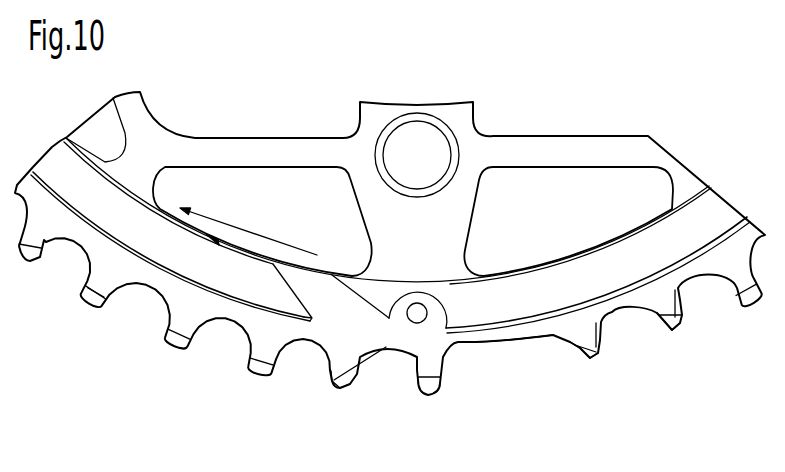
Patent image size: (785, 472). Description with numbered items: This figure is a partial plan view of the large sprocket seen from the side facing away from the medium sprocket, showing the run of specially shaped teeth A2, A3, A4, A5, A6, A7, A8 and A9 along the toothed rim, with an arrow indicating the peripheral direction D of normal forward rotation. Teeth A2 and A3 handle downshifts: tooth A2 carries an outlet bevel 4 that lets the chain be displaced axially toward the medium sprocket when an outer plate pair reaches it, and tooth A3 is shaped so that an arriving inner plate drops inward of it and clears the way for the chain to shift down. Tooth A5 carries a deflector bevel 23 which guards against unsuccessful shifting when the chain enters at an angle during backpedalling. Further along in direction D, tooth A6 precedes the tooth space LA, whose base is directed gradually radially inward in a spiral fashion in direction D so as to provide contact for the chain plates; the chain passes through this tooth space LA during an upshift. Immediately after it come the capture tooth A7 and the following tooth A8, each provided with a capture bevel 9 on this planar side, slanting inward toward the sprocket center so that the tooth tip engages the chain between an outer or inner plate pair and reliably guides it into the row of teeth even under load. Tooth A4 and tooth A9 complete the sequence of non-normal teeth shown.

The outlet bevel 4 is at (48, 263).
The capture bevel 9 is at (590, 360).
The deflector bevel 23 is at (345, 381).
The tooth A2 is at (102, 318).
The tooth A3 is at (170, 347).
The tooth A4 is at (258, 374).
The tooth A5 is at (330, 386).
The tooth A6 is at (428, 396).
The capture tooth A7 is at (599, 354).
The capture tooth A8 is at (679, 331).
The tooth A9 is at (752, 304).
The tooth space LA is at (506, 344).
The peripheral direction D is at (256, 235).